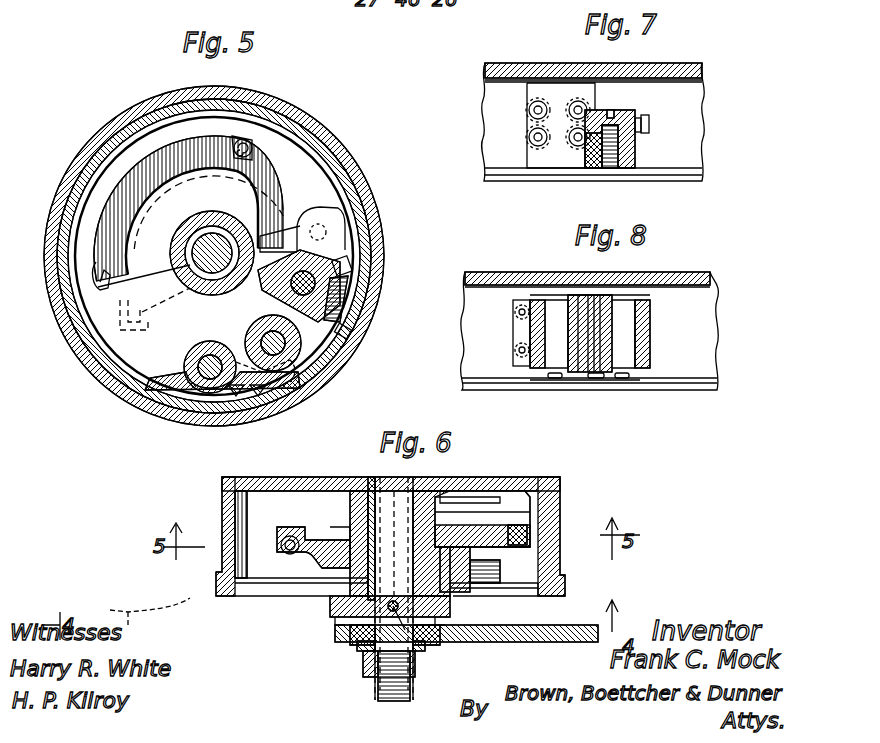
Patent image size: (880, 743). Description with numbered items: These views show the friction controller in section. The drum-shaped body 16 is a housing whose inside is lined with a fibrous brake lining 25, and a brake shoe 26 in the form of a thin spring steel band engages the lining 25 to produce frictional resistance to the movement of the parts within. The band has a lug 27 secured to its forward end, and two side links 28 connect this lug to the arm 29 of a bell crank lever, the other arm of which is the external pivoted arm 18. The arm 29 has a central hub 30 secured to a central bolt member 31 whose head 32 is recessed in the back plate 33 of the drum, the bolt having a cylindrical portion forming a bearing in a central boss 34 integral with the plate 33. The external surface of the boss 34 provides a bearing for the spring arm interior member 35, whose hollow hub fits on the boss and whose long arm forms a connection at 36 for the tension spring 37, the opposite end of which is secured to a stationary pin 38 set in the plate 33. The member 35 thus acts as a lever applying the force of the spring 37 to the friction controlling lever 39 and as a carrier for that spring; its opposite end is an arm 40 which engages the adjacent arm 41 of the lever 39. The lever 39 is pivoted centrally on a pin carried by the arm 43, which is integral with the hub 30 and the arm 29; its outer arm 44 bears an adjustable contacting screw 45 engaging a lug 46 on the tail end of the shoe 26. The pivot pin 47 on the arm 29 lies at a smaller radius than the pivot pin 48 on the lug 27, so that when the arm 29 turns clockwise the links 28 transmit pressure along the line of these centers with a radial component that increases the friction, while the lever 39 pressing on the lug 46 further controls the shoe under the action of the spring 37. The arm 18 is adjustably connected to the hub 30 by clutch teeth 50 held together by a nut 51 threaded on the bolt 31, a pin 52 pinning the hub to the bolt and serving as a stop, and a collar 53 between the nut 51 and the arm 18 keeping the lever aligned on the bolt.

In FIG. 6, the drum-shaped body 16 is at (220, 590).
In FIG. 6, the pivoted arm 18 is at (525, 643).
In FIG. 5, the brake lining 25 is at (80, 352).
In FIG. 5, the brake shoe 26 is at (142, 375).
In FIG. 7, the brake shoe 26 is at (496, 162).
In FIG. 8, the brake shoe 26 is at (482, 354).
In FIG. 8, the lug 27 is at (520, 368).
In FIG. 8, the side links 28 is at (602, 290).
In FIG. 8, the arm of bell crank lever 29 is at (652, 340).
In FIG. 6, the central hub 30 is at (333, 613).
In FIG. 6, the central bolt member 31 is at (368, 522).
In FIG. 6, the head 32 is at (413, 490).
In FIG. 7, the back plate 33 is at (690, 66).
In FIG. 8, the back plate 33 is at (706, 278).
In FIG. 6, the back plate 33 is at (500, 480).
In FIG. 6, the central boss 34 is at (340, 508).
In FIG. 5, the spring arm interior member 35 is at (170, 188).
In FIG. 6, the spring arm interior member 35 is at (305, 565).
In FIG. 5, the spring connection 36 is at (96, 282).
In FIG. 5, the tension spring 37 is at (120, 183).
In FIG. 5, the stationary pin 38 is at (246, 146).
In FIG. 5, the friction controlling lever 39 is at (352, 302).
In FIG. 7, the friction controlling lever 39 is at (634, 113).
In FIG. 5, the arm 40 is at (322, 224).
In FIG. 5, the arm of lever 41 is at (212, 260).
In FIG. 7, the arm 43 is at (636, 158).
In FIG. 5, the outer arm of lever 44 is at (350, 334).
In FIG. 5, the adjustable contacting screw 45 is at (348, 278).
In FIG. 7, the adjustable contacting screw 45 is at (650, 123).
In FIG. 7, the lug 46 is at (528, 130).
In FIG. 5, the arm 47 is at (180, 402).
In FIG. 5, the pivot pin 48 is at (224, 396).
In FIG. 8, the pivot pin 48 is at (556, 358).
In FIG. 6, the clutch teeth 50 is at (345, 628).
In FIG. 6, the nut 51 is at (365, 668).
In FIG. 6, the pin 52 is at (418, 650).
In FIG. 6, the collar 53 is at (360, 648).